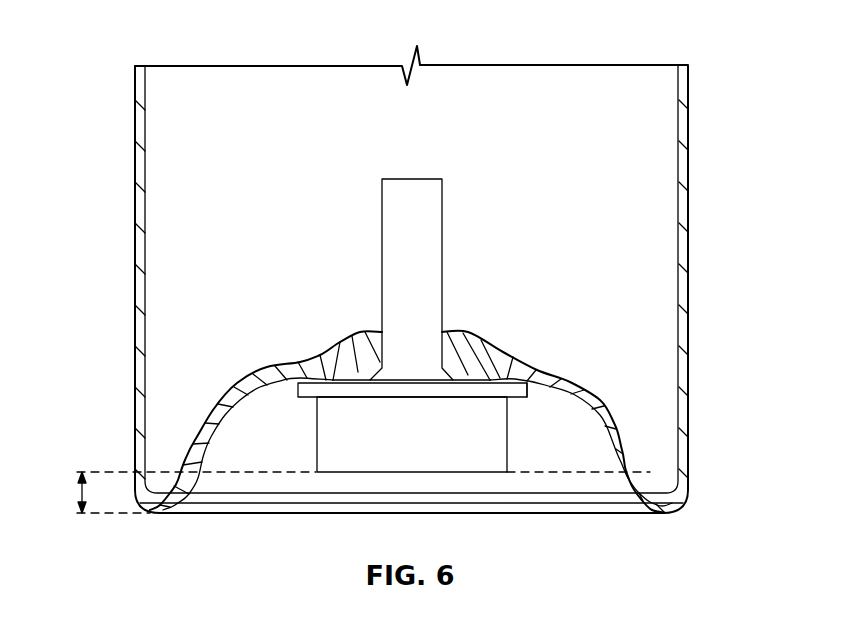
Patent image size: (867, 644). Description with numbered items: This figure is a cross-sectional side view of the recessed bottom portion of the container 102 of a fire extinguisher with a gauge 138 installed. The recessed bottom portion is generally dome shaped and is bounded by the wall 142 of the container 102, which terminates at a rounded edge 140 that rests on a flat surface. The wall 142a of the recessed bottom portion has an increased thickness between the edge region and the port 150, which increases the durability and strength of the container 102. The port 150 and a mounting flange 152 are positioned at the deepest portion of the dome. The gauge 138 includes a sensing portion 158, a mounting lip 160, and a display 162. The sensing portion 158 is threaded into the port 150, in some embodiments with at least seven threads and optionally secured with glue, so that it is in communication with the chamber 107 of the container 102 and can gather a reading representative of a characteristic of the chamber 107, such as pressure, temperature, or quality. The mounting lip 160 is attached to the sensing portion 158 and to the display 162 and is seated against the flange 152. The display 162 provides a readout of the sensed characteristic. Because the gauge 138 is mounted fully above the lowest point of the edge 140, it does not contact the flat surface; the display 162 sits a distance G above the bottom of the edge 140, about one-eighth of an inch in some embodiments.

The container 102 is at (101, 94).
The chamber 107 is at (477, 132).
The gauge 138 is at (305, 420).
The edge 140 is at (677, 500).
The wall 142 is at (683, 207).
The wall of the recessed bottom portion 142a is at (594, 399).
The port 150 is at (445, 338).
The mounting flange 152 is at (497, 380).
The sensing portion 158 is at (428, 208).
The mounting lip 160 is at (526, 391).
The display 162 is at (455, 452).
The distance G is at (80, 492).